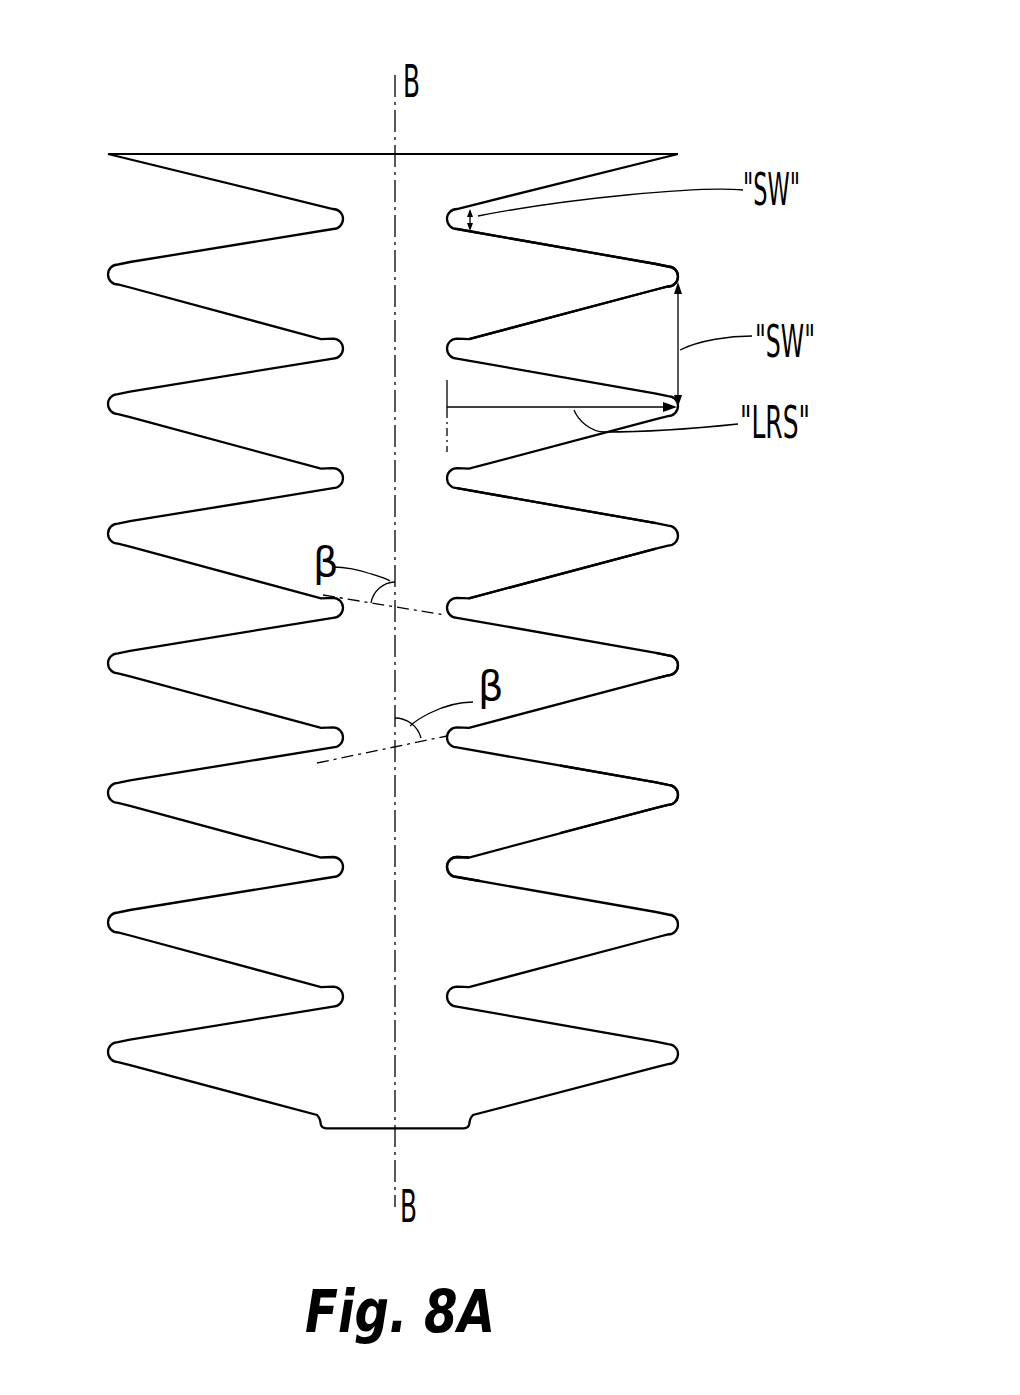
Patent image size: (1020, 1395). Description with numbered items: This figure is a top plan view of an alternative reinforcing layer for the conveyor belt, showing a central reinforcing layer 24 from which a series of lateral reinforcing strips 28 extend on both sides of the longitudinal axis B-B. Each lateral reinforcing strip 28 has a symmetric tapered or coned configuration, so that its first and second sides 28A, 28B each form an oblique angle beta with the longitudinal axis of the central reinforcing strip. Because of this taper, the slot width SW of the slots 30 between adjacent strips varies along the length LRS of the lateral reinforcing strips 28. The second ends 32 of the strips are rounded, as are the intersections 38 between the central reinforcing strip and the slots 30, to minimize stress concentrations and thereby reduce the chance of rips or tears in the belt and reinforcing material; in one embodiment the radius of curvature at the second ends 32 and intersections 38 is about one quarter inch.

The central reinforcing layer 24 is at (425, 178).
The lateral reinforcing strip 28 is at (648, 278).
The first side 28A is at (641, 521).
The second side 28B is at (652, 556).
The second end 32 is at (680, 668).
The slot 30 is at (628, 742).
The intersection 38 is at (470, 868).